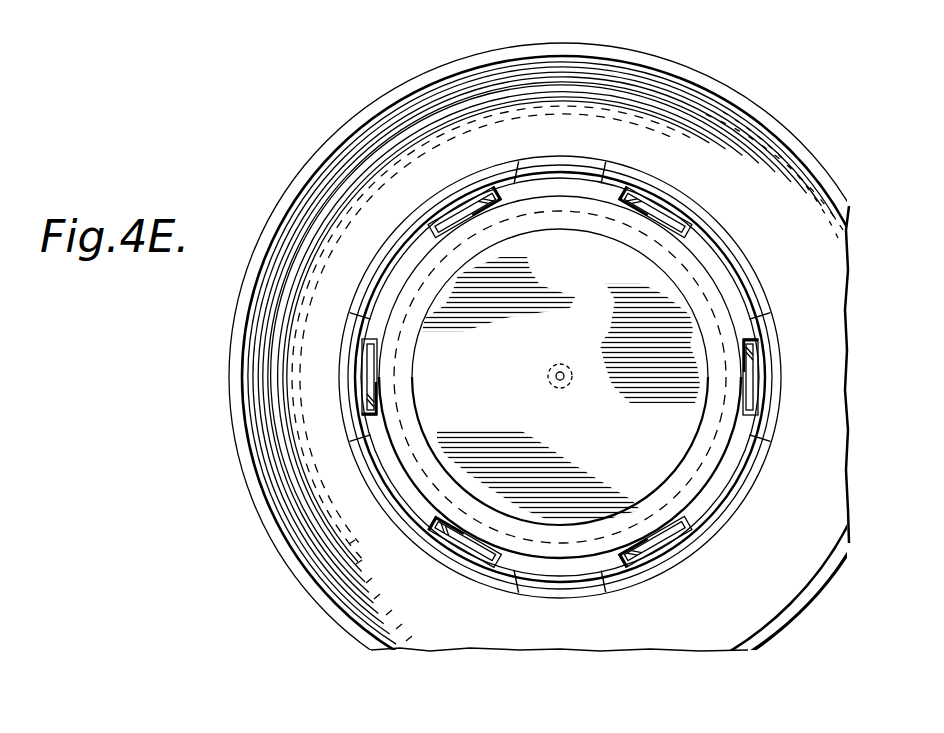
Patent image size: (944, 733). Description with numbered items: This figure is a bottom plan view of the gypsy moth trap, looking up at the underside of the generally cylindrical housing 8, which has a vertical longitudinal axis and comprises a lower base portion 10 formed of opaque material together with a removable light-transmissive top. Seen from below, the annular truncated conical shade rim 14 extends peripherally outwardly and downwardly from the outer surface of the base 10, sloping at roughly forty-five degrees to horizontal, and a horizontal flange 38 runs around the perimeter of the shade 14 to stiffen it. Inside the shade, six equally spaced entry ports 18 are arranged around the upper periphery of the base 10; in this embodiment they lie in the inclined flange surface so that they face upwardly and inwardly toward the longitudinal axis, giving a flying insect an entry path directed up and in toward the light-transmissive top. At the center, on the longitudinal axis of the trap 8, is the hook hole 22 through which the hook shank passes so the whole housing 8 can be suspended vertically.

The housing 8 is at (776, 104).
The base portion 10 is at (257, 536).
The shade rim 14 is at (587, 72).
The entry ports 18 is at (640, 205).
The hook hole 22 is at (558, 390).
The horizontal flange 38 is at (318, 158).